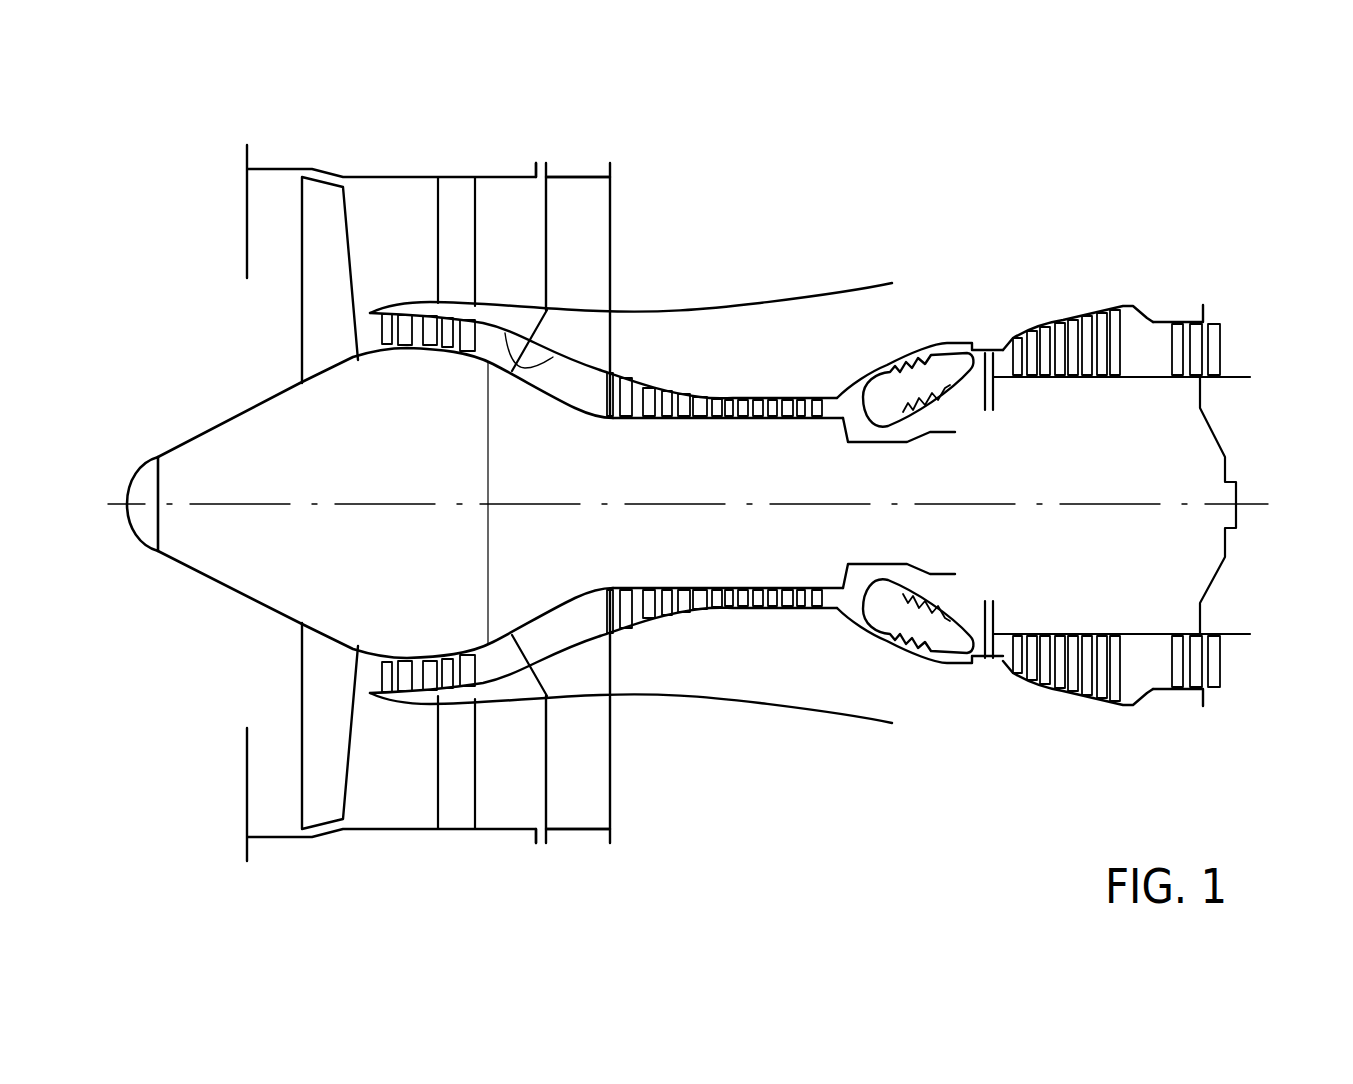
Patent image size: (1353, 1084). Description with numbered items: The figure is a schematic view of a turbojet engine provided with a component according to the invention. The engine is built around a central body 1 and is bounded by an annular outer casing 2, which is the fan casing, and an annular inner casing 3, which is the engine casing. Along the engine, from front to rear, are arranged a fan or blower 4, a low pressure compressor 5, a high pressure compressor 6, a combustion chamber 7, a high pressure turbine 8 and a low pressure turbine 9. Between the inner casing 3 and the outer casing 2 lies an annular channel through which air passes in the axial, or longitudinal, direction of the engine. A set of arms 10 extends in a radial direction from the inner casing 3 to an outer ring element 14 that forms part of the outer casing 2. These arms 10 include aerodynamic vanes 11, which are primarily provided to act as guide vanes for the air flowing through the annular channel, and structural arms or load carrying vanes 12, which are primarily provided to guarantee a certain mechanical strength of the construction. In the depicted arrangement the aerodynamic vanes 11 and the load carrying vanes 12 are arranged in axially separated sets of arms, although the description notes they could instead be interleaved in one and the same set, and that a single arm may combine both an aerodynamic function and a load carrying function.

The central body 1 is at (265, 557).
The annular outer casing 2 is at (272, 168).
The annular inner casing 3 is at (553, 357).
The fan 4 is at (322, 302).
The low pressure compressor 5 is at (407, 715).
The high pressure compressor 6 is at (687, 632).
The combustion chamber 7 is at (915, 628).
The high pressure turbine 8 is at (1038, 300).
The low pressure turbine 9 is at (1174, 301).
The set of arms 10 is at (645, 228).
The aerodynamic vanes 11 is at (442, 223).
The load carrying vanes 12 is at (593, 208).
The outer ring element 14 is at (598, 175).